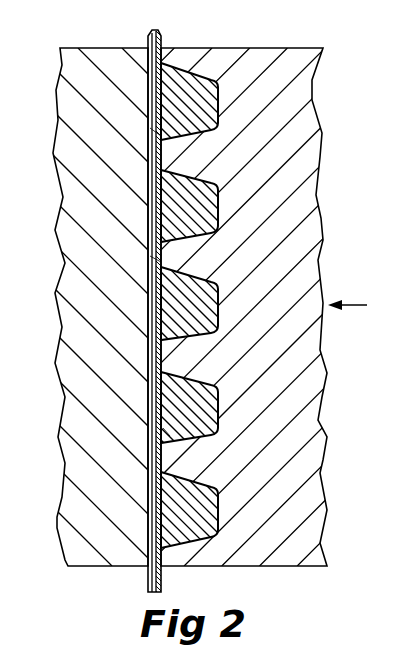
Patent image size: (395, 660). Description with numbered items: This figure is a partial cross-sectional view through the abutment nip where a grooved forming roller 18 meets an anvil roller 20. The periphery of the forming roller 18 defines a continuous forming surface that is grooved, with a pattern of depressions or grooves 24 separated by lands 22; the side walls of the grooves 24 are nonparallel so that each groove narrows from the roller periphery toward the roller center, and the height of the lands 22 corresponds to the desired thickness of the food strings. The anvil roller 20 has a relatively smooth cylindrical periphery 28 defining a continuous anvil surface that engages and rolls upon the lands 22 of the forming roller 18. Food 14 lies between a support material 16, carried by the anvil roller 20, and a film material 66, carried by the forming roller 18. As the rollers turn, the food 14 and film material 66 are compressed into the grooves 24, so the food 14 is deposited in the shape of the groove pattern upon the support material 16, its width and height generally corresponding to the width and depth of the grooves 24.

The food 14 is at (206, 487).
The support material 16 is at (148, 37).
The forming roller 18 is at (310, 80).
The anvil roller 20 is at (63, 78).
The lands 22 is at (163, 354).
The grooves 24 is at (158, 189).
The cylindrical periphery 28 is at (168, 433).
The film material 66 is at (163, 38).